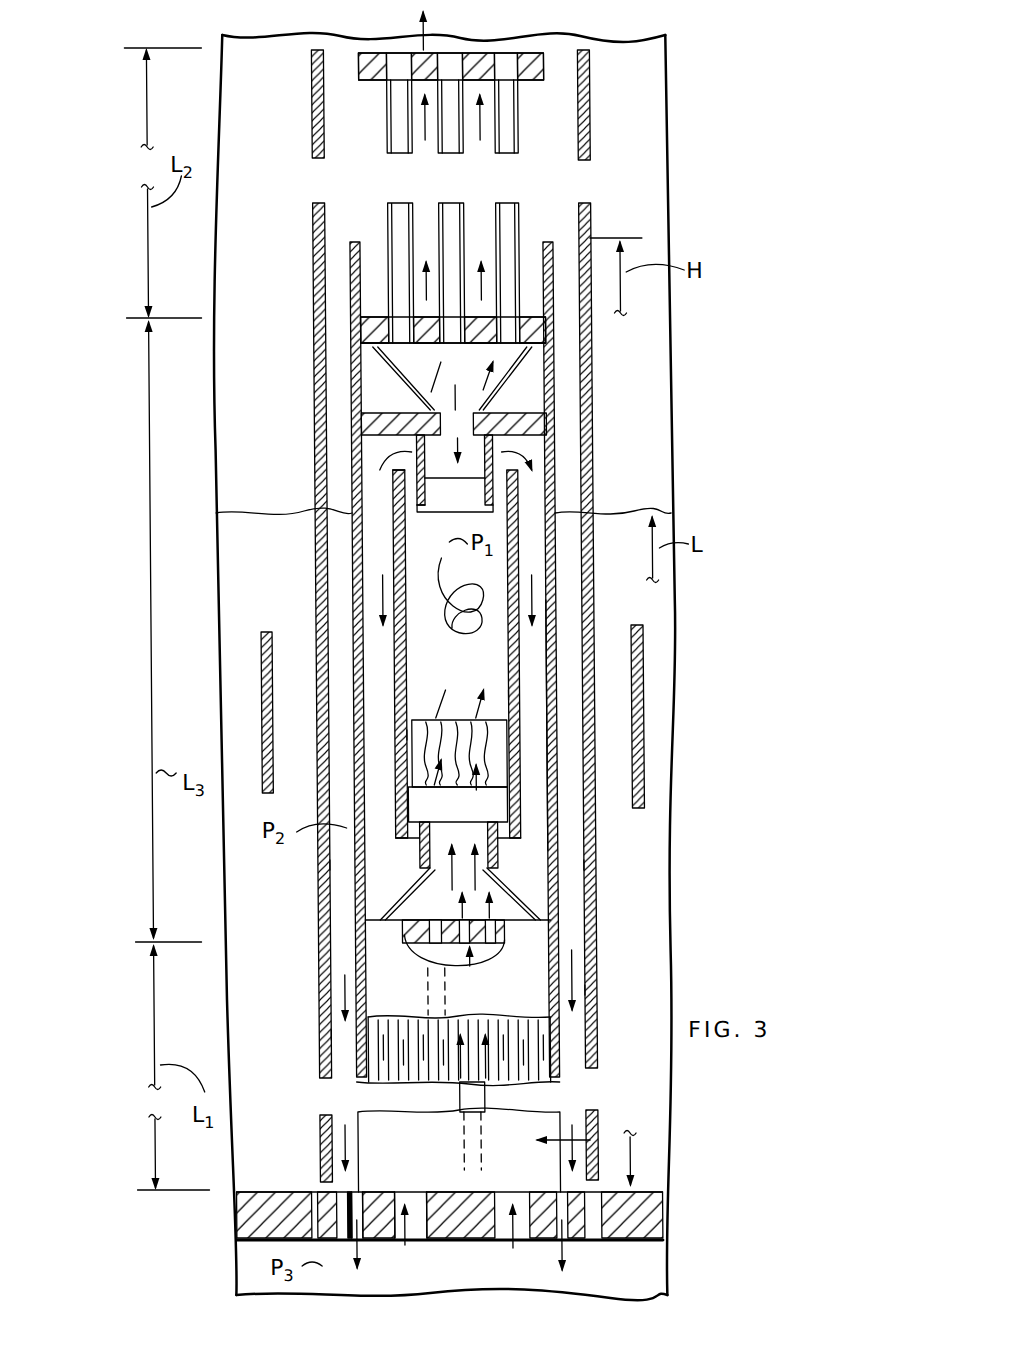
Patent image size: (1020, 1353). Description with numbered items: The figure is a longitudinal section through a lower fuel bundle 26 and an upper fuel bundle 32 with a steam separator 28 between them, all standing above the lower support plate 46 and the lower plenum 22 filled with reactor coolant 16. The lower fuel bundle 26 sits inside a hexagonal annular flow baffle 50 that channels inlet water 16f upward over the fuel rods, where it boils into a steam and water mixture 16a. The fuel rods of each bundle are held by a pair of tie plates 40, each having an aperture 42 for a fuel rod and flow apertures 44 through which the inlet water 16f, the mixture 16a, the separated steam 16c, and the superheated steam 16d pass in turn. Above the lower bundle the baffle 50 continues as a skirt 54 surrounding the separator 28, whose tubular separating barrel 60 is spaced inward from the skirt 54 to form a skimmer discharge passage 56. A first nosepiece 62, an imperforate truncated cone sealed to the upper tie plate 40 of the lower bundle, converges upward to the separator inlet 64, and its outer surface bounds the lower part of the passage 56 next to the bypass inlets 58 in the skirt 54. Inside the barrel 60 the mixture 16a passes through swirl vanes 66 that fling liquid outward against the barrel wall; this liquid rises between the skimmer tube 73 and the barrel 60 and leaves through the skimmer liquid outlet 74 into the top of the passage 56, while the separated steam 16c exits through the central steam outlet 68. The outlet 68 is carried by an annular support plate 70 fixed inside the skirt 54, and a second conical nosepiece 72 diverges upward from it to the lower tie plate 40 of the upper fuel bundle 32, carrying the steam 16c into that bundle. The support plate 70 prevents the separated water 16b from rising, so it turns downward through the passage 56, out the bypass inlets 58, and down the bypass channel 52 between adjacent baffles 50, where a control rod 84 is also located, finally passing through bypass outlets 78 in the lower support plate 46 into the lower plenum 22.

The reactor coolant 16 is at (638, 513).
The steam and water mixture 16a is at (490, 638).
The separated water 16b is at (372, 458).
The separated steam 16c is at (425, 392).
The superheated steam 16d is at (424, 48).
The inlet water 16f is at (408, 1245).
The lower plenum 22 is at (545, 1285).
The lower fuel bundles 26 is at (372, 1083).
The steam separators 28 is at (515, 690).
The upper fuel bundles 32 is at (387, 215).
The tie plates 40 is at (538, 350).
The aperture 42 is at (506, 62).
The flow apertures 44 is at (481, 53).
The lower support plate 46 is at (640, 1242).
The annular flow baffle 50 is at (258, 712).
The bypass channel 52 is at (580, 795).
The skirt 54 is at (552, 606).
The skimmer discharge passage 56 is at (525, 733).
The bypass inlets 58 is at (335, 862).
The separating barrel 60 is at (520, 556).
The first nosepiece 62 is at (420, 850).
The separator inlet 64 is at (486, 857).
The swirl vanes 66 is at (395, 735).
The central steam outlet 68 is at (494, 442).
The annular support plate 70 is at (545, 402).
The second conical nosepiece 72 is at (385, 365).
The skimmer tube 73 is at (395, 472).
The skimmer liquid outlet 74 is at (410, 482).
The bypass outlets 78 is at (358, 1243).
The control rods 84 is at (592, 990).